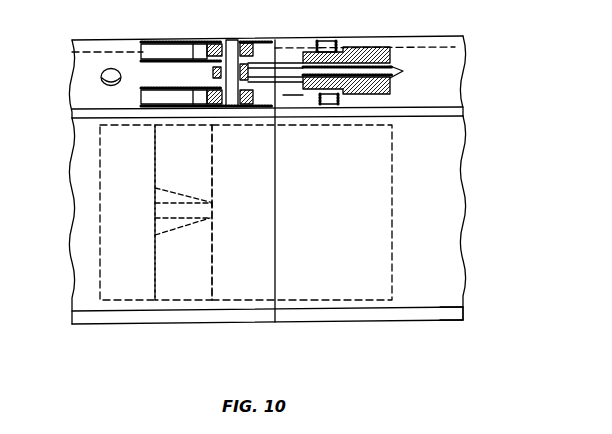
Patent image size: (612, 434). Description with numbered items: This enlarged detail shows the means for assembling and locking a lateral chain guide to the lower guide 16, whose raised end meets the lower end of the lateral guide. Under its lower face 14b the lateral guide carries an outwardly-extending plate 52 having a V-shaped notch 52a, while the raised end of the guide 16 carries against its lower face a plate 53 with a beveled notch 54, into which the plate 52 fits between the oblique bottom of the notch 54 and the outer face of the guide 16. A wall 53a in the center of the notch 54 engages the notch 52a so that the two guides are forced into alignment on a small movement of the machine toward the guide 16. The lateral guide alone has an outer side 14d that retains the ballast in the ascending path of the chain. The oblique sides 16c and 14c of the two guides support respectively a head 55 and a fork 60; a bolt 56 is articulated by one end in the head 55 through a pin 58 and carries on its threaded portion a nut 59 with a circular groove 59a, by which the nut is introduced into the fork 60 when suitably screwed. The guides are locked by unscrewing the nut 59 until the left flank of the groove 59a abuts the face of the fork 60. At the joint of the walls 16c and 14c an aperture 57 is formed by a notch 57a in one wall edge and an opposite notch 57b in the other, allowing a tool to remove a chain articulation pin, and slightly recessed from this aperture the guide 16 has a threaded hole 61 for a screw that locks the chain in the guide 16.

The lower face 14b is at (452, 215).
The oblique side 14c is at (455, 96).
The outer side 14d is at (462, 315).
The guide 16 is at (72, 254).
The oblique side 16c is at (69, 100).
The plate 52 is at (340, 287).
The V-shaped notch 52a is at (174, 188).
The plate 53 is at (128, 287).
The wall 53a is at (213, 208).
The beveled notch 54 is at (157, 280).
The head 55 is at (153, 50).
The bolt 56 is at (213, 72).
The aperture 57 is at (290, 84).
The notch 57a is at (263, 60).
The notch 57b is at (292, 58).
The pin 58 is at (238, 38).
The nut 59 is at (377, 47).
The circular groove 59a is at (340, 98).
The fork 60 is at (343, 48).
The threaded hole 61 is at (101, 76).